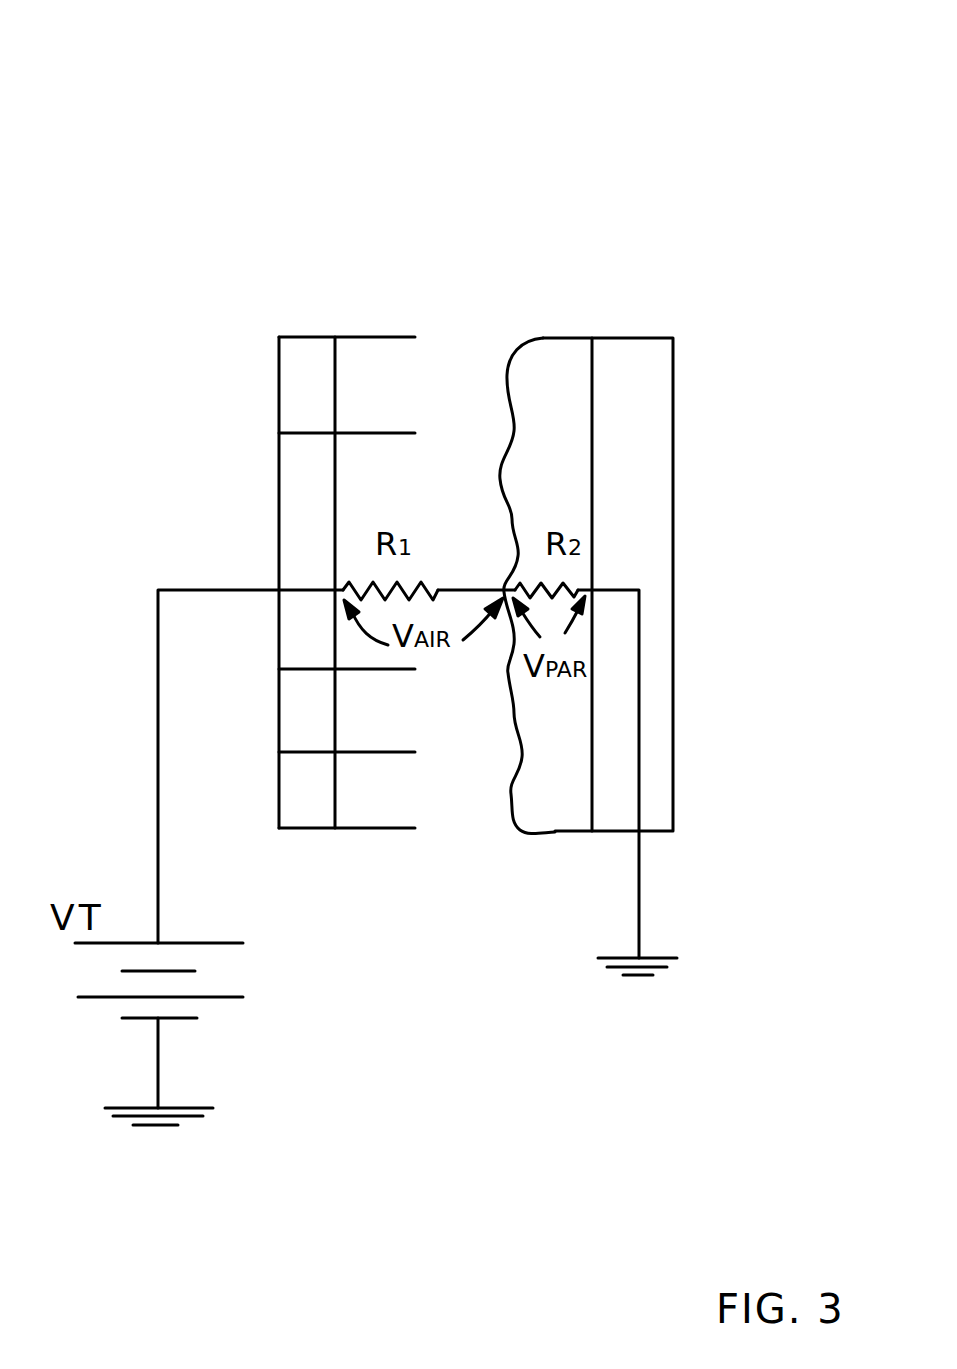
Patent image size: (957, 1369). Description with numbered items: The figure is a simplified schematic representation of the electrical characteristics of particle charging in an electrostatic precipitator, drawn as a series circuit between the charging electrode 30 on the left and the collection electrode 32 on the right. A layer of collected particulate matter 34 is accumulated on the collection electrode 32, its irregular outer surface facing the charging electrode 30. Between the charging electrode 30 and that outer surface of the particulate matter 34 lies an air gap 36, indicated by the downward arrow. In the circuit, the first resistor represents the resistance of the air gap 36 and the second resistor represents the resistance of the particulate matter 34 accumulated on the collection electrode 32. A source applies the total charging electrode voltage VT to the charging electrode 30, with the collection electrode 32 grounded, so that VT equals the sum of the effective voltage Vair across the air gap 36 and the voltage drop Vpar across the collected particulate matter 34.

The charging electrode 30 is at (293, 418).
The collection electrode 32 is at (625, 358).
The collected particulate matter 34 is at (545, 367).
The air gap 36 is at (486, 372).